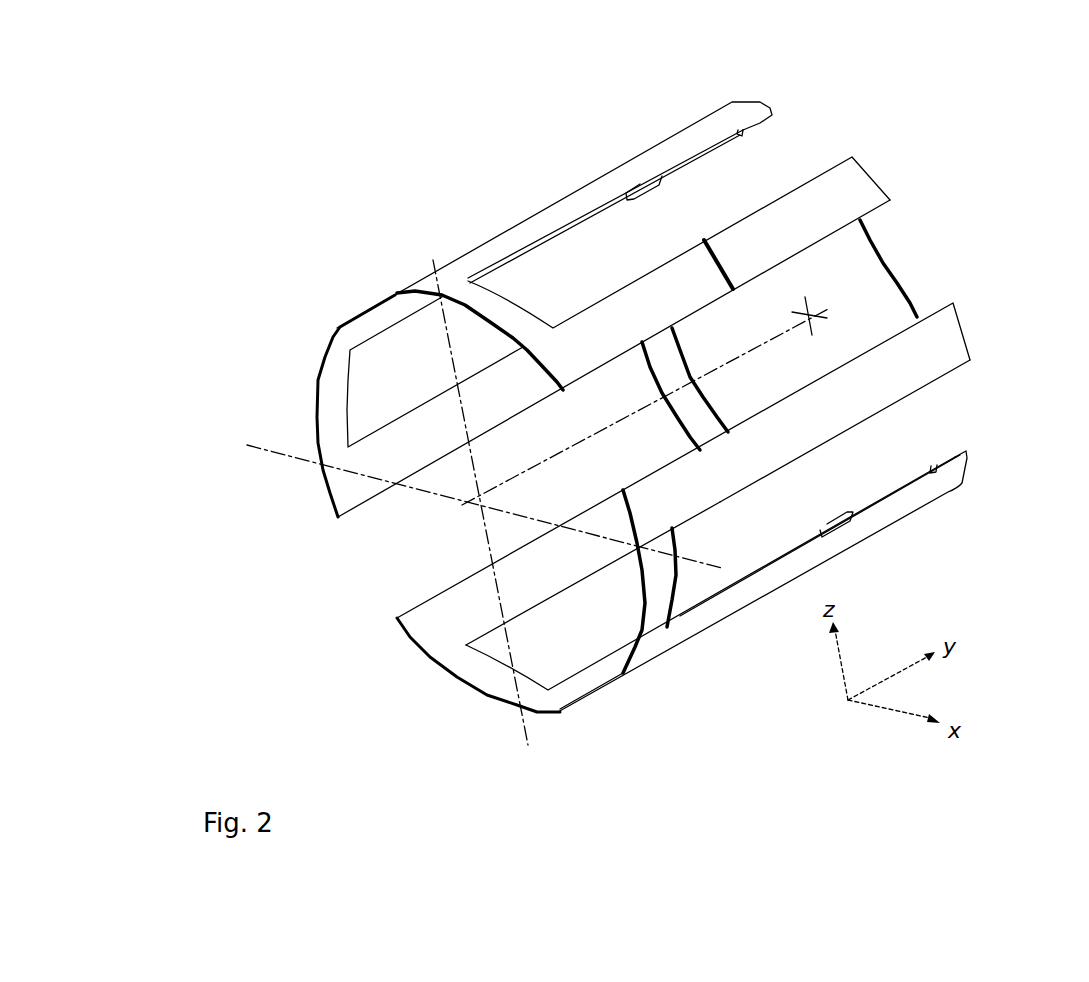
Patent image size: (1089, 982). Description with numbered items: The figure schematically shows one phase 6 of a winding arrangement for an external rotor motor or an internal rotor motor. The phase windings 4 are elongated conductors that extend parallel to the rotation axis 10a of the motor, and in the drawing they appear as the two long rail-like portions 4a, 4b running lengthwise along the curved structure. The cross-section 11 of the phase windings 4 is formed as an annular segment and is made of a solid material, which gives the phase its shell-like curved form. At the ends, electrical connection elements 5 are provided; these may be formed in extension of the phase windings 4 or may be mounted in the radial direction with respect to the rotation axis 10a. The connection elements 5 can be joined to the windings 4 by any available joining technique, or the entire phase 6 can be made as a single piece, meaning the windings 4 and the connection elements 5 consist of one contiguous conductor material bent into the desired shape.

The phase windings 4 is at (817, 430).
The first longitudinal rail of housing 4a is at (657, 518).
The second longitudinal rail of housing 4b is at (953, 355).
The electrical connection elements 5 is at (918, 258).
The phase 6 is at (458, 205).
The rotation axis 10a is at (546, 464).
The cross-section 11 is at (713, 248).